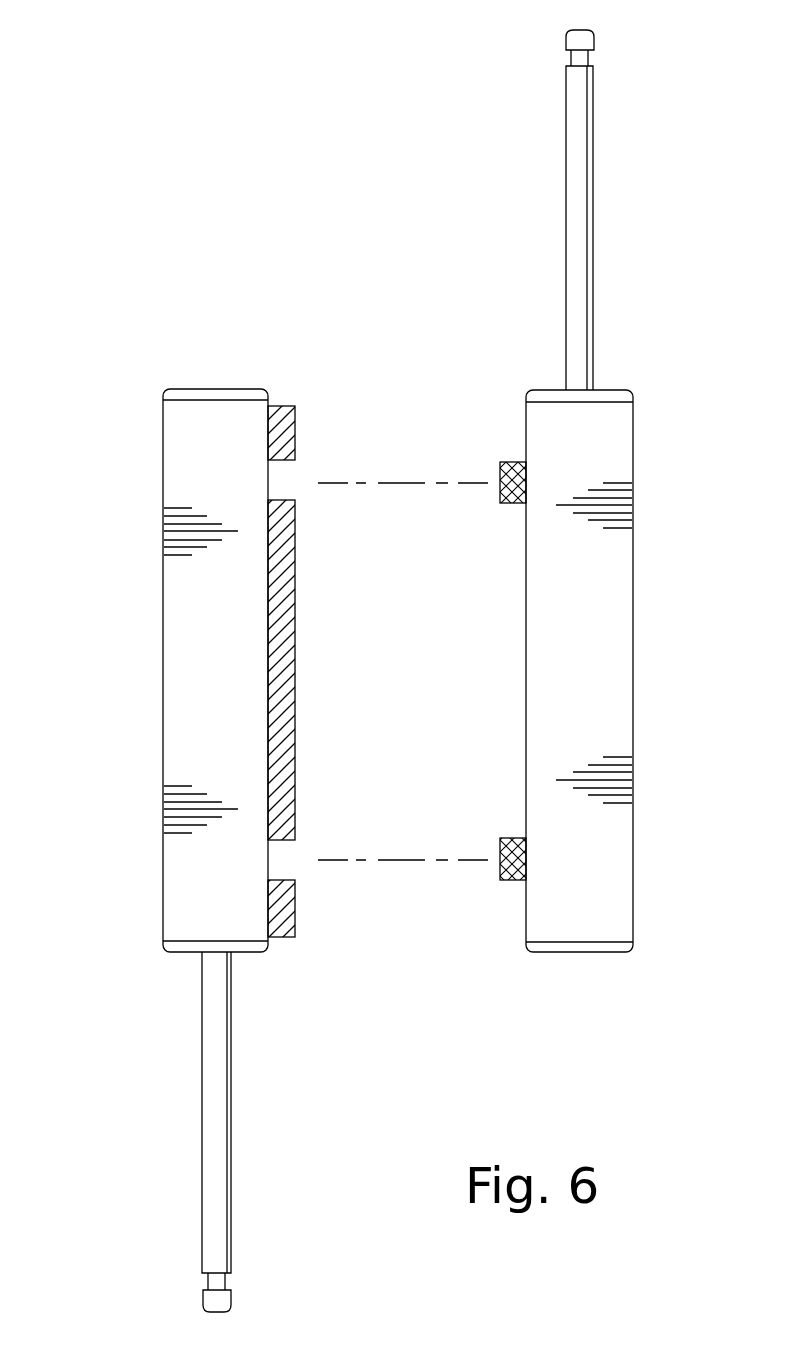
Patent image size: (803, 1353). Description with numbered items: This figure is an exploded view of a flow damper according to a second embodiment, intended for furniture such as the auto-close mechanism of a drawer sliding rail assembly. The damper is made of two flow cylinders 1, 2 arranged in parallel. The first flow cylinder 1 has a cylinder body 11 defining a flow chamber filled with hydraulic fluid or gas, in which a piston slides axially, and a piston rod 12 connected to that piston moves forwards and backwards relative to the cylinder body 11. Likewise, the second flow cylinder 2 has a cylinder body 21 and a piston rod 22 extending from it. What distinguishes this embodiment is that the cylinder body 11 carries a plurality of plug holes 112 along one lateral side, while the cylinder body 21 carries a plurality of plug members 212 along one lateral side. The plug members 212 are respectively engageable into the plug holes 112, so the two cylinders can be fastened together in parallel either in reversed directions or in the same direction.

The first flow cylinder 1 is at (134, 651).
The cylinder body 11 is at (163, 714).
The plug holes 112 is at (290, 448).
The piston rod 12 is at (202, 1141).
The second flow cylinder 2 is at (640, 742).
The cylinder body 21 is at (633, 633).
The plug members 212 is at (516, 479).
The piston rod 22 is at (593, 250).